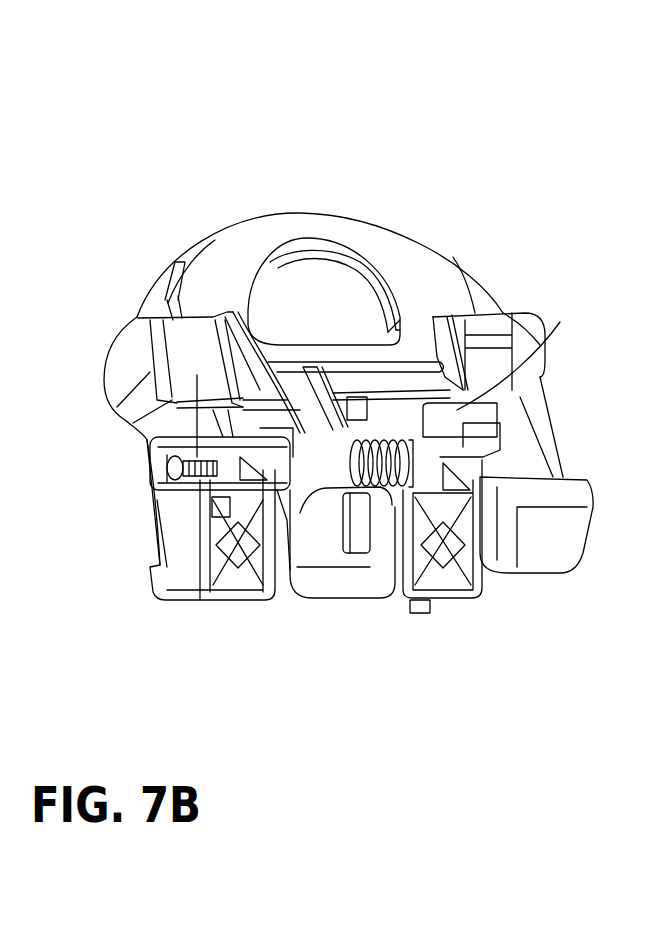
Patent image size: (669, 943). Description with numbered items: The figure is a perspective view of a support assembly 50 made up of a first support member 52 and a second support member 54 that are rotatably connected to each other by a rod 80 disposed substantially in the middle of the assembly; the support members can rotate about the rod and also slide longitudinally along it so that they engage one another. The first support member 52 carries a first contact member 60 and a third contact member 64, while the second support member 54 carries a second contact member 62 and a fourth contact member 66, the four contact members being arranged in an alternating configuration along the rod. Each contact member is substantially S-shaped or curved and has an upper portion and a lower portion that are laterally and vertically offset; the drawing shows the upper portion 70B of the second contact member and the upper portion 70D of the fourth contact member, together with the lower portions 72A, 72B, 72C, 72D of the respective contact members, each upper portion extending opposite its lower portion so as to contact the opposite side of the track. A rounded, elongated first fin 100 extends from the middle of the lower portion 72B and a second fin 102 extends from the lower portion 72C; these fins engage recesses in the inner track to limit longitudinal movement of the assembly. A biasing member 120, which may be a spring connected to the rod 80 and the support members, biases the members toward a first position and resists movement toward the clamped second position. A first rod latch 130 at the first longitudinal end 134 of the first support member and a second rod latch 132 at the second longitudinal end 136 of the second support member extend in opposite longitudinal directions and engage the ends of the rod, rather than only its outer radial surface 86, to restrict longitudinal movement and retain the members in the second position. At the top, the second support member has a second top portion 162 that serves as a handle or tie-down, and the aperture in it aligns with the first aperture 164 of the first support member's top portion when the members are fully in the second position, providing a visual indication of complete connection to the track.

The support assembly 50 is at (248, 112).
The first support member 52 is at (497, 280).
The second support member 54 is at (136, 298).
The first contact member 60 is at (541, 590).
The second contact member 62 is at (442, 616).
The third contact member 64 is at (331, 595).
The fourth contact member 66 is at (225, 608).
The upper portion 70B is at (560, 322).
The upper portion 70D is at (177, 422).
The lower portion 72A is at (567, 530).
The lower portion 72B is at (448, 586).
The lower portion 72C is at (285, 577).
The lower portion 72D is at (172, 580).
The rod 80 is at (147, 457).
The outer radial surface 86 is at (135, 348).
The first fin 100 is at (424, 610).
The second fin 102 is at (353, 578).
The biasing member 120 is at (485, 460).
The first rod latch 130 is at (563, 428).
The second rod latch 132 is at (150, 478).
The first longitudinal end 134 is at (575, 463).
The second longitudinal end 136 is at (153, 538).
The second top portion 162 is at (160, 285).
The first aperture 164 is at (320, 283).